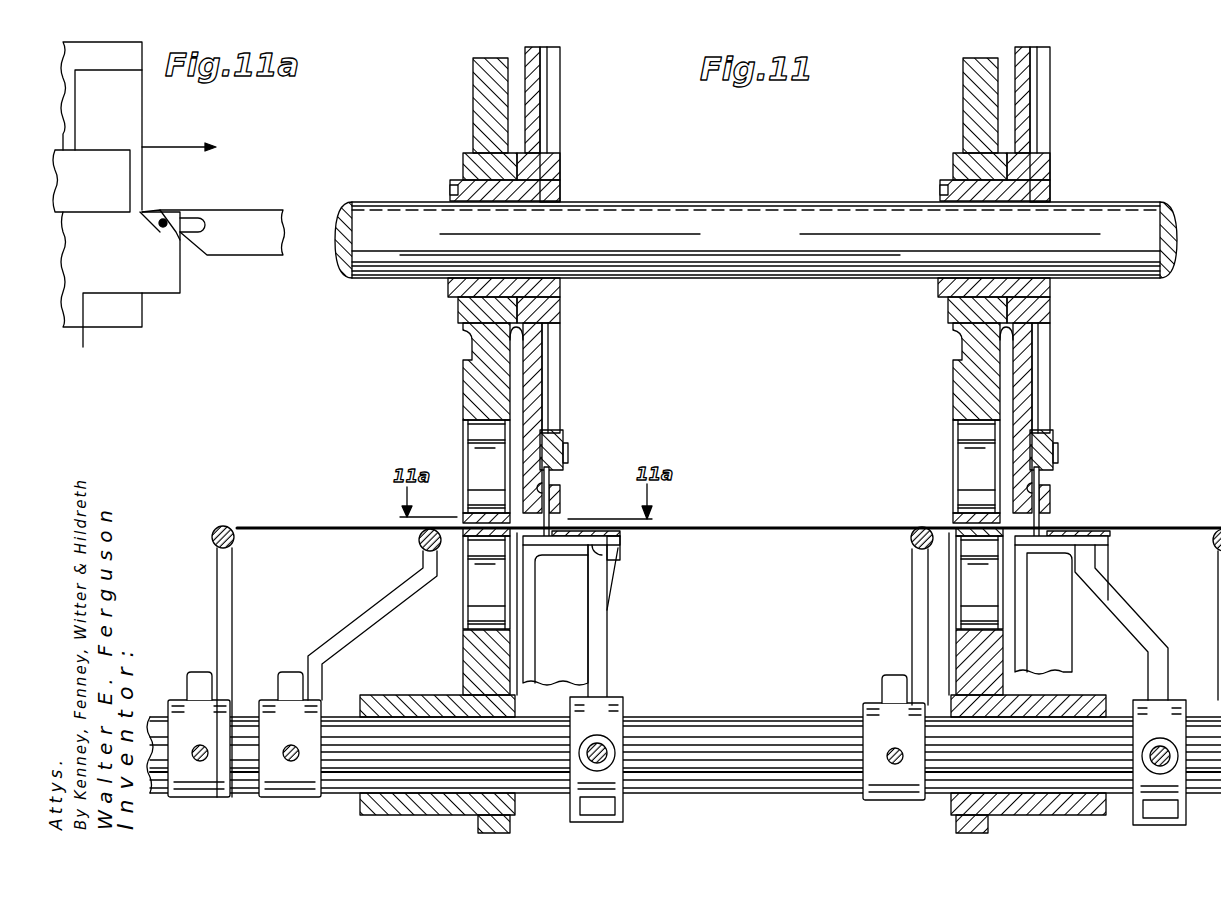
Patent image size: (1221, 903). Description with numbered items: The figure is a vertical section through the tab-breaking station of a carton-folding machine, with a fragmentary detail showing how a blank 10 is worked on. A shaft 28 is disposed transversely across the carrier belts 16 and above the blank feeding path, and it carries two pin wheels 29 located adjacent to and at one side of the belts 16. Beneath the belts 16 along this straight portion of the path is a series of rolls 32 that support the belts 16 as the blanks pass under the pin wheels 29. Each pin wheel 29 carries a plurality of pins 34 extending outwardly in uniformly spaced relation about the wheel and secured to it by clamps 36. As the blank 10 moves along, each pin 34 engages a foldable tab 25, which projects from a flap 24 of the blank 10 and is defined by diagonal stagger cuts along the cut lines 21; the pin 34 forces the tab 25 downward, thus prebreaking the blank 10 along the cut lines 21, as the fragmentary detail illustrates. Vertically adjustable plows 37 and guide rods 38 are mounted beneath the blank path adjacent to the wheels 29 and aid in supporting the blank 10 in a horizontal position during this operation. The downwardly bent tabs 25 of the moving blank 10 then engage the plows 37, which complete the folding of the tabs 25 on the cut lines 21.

In FIG. 11, the blank 10 is at (830, 520).
In FIG. 11A, the carrier belts 16 is at (108, 189).
In FIG. 11A, the cut lines 21 is at (170, 255).
In FIG. 11A, the flaps 24 is at (124, 129).
In FIG. 11A, the foldable tab 25 is at (170, 235).
In FIG. 11, the shaft 28 is at (752, 202).
In FIG. 11, the pin wheels 29 is at (550, 505).
In FIG. 11, the rolls 32 is at (482, 592).
In FIG. 11A, the pins 34 is at (157, 226).
In FIG. 11, the pins 34 is at (553, 521).
In FIG. 11, the clamps 36 is at (560, 433).
In FIG. 11A, the plows 37 is at (243, 218).
In FIG. 11, the plows 37 is at (621, 556).
In FIG. 11, the guide rods 38 is at (230, 528).